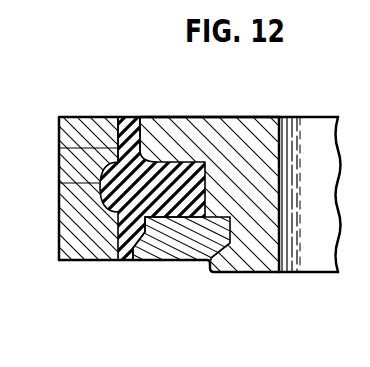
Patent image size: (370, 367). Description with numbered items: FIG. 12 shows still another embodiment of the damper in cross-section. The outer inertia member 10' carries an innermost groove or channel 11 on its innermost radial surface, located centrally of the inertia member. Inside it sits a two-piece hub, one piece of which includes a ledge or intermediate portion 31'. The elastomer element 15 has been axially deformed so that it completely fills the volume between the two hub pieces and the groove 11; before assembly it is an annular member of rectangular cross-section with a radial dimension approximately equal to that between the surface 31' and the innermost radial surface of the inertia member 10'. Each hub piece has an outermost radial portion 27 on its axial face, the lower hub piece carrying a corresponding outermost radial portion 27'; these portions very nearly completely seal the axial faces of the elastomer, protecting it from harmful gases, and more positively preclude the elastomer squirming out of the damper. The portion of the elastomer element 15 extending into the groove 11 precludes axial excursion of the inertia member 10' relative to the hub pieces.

The outer inertia member 10' is at (169, 182).
The innermost groove or channel 11 is at (98, 183).
The elastomer element 15 is at (70, 139).
The outermost radial portion 27 is at (135, 109).
The lower stem portion 27' is at (120, 267).
The ledge or intermediate portion 31' is at (273, 194).